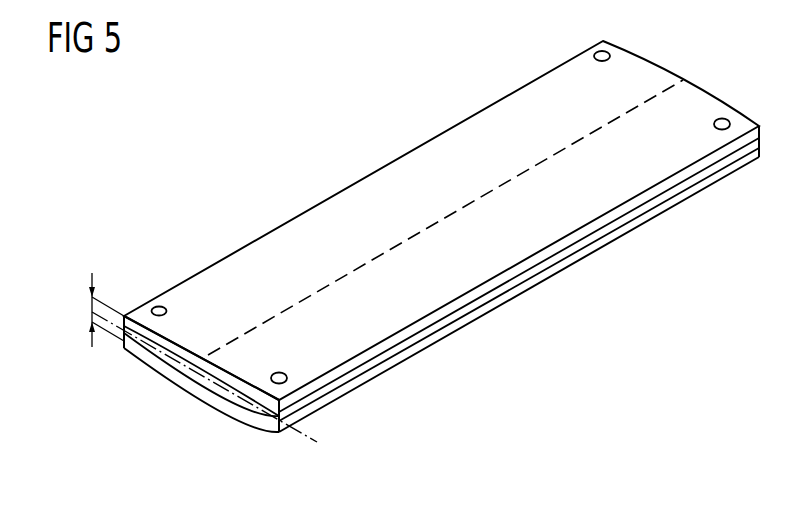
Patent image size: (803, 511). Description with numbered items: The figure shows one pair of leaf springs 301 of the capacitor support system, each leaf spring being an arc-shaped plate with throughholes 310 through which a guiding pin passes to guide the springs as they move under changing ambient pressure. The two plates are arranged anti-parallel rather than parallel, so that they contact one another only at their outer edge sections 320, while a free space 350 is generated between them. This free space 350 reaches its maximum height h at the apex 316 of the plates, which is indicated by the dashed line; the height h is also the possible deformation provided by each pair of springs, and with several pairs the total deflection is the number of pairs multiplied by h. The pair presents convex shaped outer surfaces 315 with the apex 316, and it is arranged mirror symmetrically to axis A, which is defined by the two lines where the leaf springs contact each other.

The pair of leaf springs 301 is at (466, 78).
The convex shaped outer surfaces 315 is at (317, 212).
The apex 316 is at (367, 262).
The throughholes 310 is at (167, 311).
The outer edge sections 320 is at (356, 377).
The free space 350 is at (197, 382).
The axis A is at (215, 383).
The maximum height h is at (92, 300).